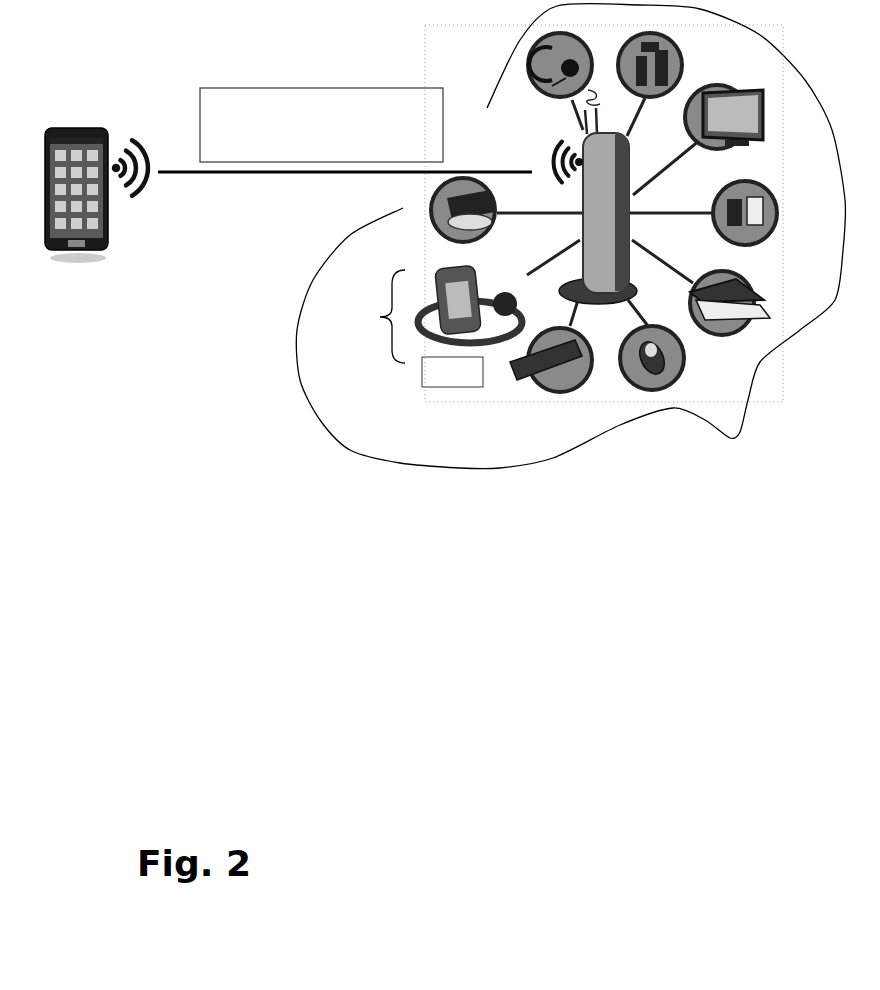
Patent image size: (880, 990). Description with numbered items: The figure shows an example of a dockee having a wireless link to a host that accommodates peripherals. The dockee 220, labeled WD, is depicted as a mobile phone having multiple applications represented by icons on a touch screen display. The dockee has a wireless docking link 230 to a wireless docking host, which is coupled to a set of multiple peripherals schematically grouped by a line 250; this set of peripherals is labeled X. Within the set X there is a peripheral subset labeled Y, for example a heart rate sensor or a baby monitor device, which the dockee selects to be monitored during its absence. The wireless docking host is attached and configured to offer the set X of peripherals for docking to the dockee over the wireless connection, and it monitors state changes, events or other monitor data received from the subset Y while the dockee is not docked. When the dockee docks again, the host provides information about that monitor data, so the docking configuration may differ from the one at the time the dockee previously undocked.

The dockee 220 is at (78, 97).
The wireless docking link 230 is at (298, 174).
The line 250 is at (555, 458).